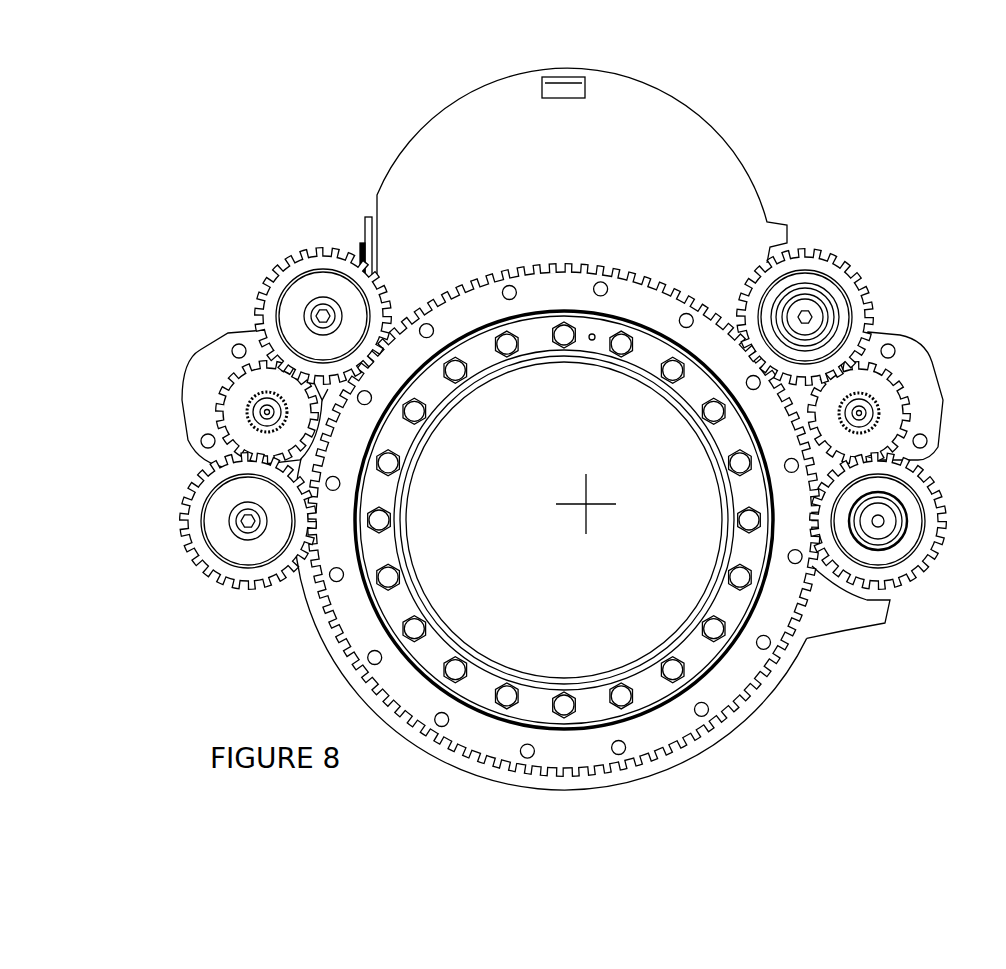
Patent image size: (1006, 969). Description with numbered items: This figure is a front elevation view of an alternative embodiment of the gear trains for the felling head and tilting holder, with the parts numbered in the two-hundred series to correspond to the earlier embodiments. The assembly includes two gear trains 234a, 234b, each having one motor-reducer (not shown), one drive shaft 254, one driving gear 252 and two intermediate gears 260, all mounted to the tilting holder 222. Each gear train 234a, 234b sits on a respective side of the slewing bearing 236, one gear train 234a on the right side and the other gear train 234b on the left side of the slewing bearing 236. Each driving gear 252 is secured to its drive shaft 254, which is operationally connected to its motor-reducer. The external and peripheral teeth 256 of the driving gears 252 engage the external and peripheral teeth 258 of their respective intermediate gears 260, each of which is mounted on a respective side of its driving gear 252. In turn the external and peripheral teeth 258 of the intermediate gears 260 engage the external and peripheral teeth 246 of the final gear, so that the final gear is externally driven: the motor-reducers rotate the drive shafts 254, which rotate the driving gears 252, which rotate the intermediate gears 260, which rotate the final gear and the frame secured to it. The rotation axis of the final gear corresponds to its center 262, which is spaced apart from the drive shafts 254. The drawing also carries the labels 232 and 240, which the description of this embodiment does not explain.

The tilting holder 222 is at (668, 158).
The planet gear assembly 232 is at (240, 259).
The gear train 234a is at (193, 575).
The gear train 234b is at (918, 334).
The slewing bearing 236 is at (824, 735).
The bracket 240 is at (783, 590).
The external and peripheral teeth 246 is at (717, 720).
The driving gear 252 is at (245, 404).
The drive shaft 254 is at (260, 413).
The external and peripheral teeth 256 is at (240, 405).
The external and peripheral teeth 258 is at (268, 283).
The intermediate gear 260 is at (295, 272).
The center 262 is at (590, 502).